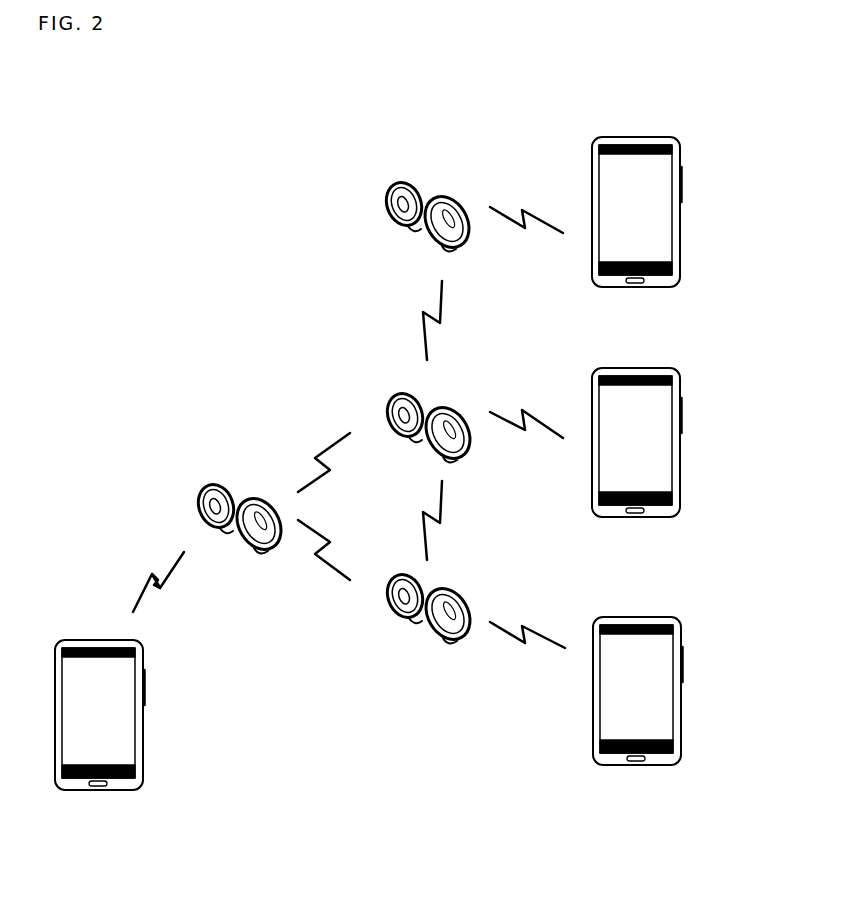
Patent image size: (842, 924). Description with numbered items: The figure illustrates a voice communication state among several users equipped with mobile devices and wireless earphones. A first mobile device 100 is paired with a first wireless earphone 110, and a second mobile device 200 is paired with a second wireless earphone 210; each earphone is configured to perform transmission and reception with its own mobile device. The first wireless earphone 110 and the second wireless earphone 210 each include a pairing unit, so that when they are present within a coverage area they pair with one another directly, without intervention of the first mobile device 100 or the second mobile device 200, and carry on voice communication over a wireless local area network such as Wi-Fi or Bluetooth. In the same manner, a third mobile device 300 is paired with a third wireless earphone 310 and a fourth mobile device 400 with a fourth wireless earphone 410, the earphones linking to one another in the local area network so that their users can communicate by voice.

The first mobile device 100 is at (146, 740).
The first wireless earphone 110 is at (258, 492).
The second mobile device 200 is at (682, 236).
The second wireless earphone 210 is at (444, 192).
The third mobile device 300 is at (682, 467).
The third wireless earphone 310 is at (452, 408).
The fourth mobile device 400 is at (682, 715).
The fourth wireless earphone 410 is at (460, 590).